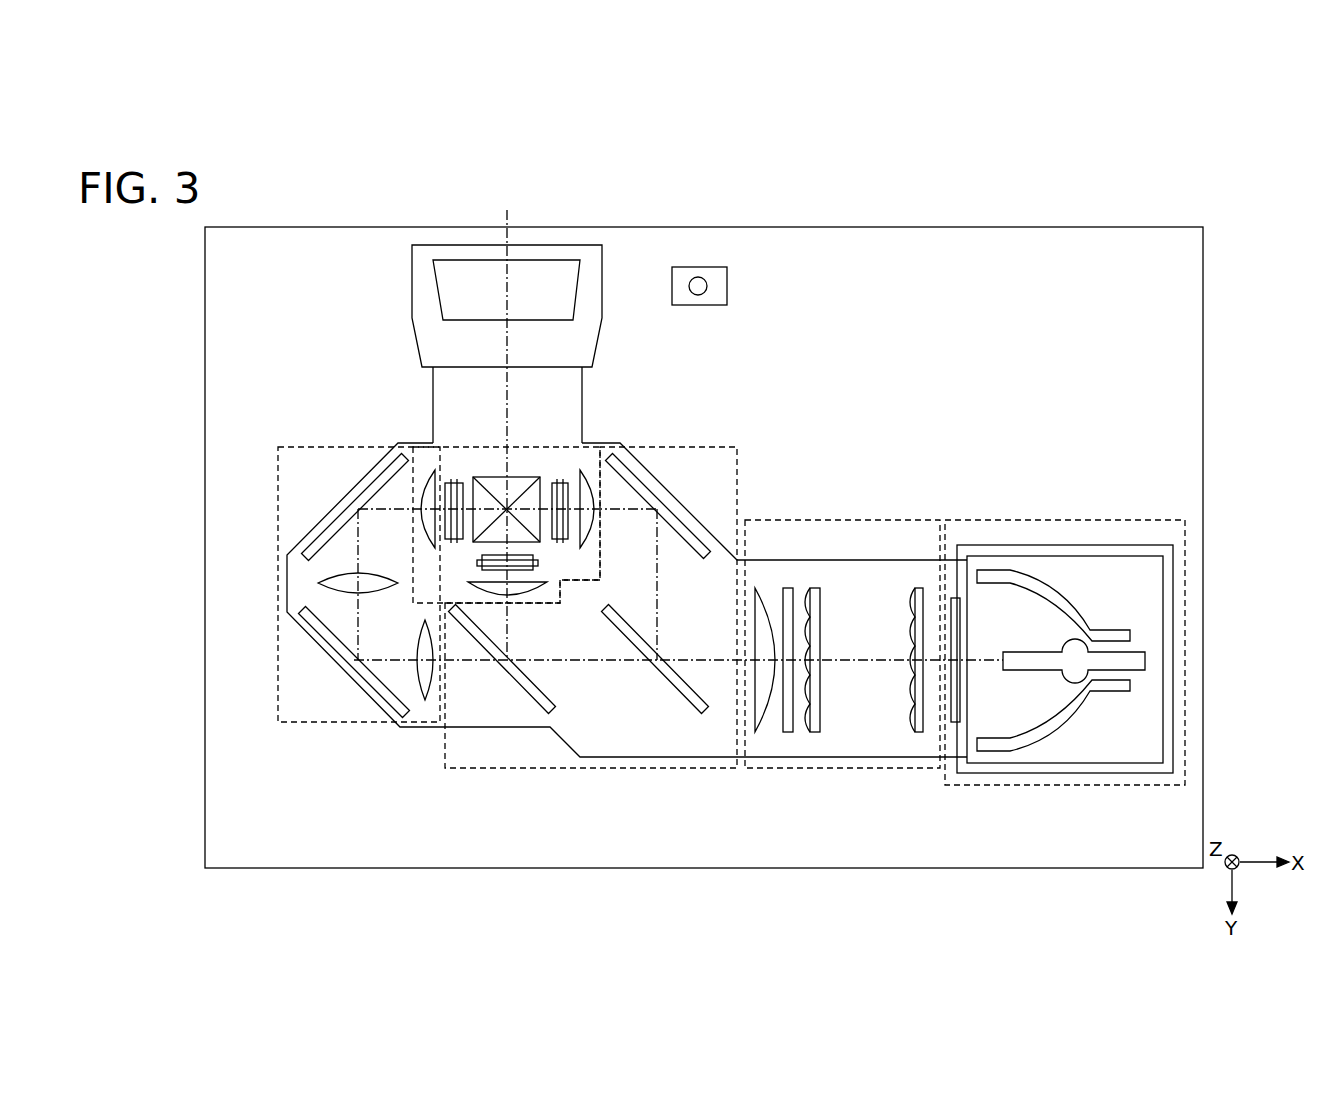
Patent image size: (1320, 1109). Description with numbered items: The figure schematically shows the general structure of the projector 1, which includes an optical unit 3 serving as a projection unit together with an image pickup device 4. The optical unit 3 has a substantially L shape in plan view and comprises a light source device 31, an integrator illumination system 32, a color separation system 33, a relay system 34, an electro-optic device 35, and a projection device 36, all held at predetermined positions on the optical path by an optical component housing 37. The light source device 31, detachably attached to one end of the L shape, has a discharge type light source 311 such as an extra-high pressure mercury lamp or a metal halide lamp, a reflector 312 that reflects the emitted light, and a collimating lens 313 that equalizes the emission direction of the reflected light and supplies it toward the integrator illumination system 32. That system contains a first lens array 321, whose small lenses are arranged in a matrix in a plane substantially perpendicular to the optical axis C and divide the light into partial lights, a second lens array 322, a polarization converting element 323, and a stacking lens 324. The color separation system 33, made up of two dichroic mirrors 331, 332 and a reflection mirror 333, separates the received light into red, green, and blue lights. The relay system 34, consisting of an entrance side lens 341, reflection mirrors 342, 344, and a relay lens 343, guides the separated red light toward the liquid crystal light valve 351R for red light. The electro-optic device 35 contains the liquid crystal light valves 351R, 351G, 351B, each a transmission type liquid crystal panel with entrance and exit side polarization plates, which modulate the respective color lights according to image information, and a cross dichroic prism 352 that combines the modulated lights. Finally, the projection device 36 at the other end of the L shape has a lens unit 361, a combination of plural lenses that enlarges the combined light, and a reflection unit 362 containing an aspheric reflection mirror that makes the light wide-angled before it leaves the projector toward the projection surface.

The projector 1 is at (1040, 210).
The optical unit 3 is at (742, 432).
The image pickup device 4 is at (714, 295).
The light source device 31 is at (983, 786).
The light source 311 is at (1040, 662).
The reflector 312 is at (1075, 705).
The collimating lens 313 is at (948, 715).
The integrator illumination system 32 is at (788, 769).
The first lens array 321 is at (917, 590).
The second lens array 322 is at (790, 590).
The polarization converting element 323 is at (808, 590).
The stacking lens 324 is at (763, 595).
The color separation system 33 is at (660, 769).
The dichroic mirror 331 is at (680, 695).
The dichroic mirror 332 is at (530, 694).
The reflection mirror 333 is at (676, 523).
The relay system 34 is at (278, 600).
The entrance side lens 341 is at (425, 690).
The reflection mirror 342 is at (302, 609).
The relay lens 343 is at (368, 590).
The reflection mirror 344 is at (342, 520).
The electro-optic device 35 is at (518, 455).
The liquid crystal light valve for R light 351R is at (455, 482).
The liquid crystal light valve for G light 351G is at (540, 566).
The liquid crystal light valve for B light 351B is at (560, 482).
The cross dichroic prism 352 is at (520, 490).
The projection device 36 is at (338, 299).
The lens unit 361 is at (465, 378).
The reflection unit 362 is at (418, 318).
The optical component housing 37 is at (718, 758).
The optical axis C is at (866, 660).